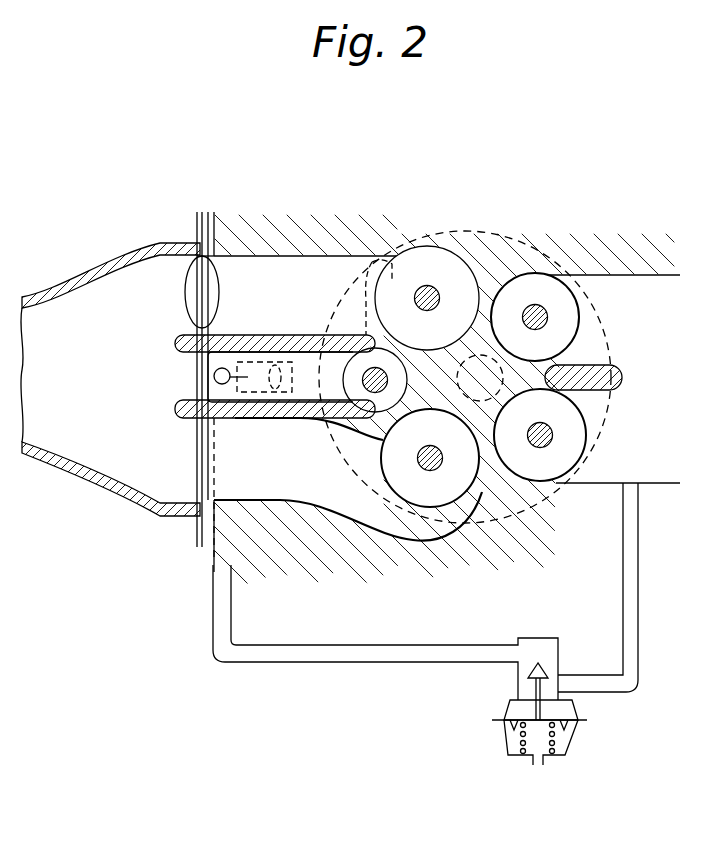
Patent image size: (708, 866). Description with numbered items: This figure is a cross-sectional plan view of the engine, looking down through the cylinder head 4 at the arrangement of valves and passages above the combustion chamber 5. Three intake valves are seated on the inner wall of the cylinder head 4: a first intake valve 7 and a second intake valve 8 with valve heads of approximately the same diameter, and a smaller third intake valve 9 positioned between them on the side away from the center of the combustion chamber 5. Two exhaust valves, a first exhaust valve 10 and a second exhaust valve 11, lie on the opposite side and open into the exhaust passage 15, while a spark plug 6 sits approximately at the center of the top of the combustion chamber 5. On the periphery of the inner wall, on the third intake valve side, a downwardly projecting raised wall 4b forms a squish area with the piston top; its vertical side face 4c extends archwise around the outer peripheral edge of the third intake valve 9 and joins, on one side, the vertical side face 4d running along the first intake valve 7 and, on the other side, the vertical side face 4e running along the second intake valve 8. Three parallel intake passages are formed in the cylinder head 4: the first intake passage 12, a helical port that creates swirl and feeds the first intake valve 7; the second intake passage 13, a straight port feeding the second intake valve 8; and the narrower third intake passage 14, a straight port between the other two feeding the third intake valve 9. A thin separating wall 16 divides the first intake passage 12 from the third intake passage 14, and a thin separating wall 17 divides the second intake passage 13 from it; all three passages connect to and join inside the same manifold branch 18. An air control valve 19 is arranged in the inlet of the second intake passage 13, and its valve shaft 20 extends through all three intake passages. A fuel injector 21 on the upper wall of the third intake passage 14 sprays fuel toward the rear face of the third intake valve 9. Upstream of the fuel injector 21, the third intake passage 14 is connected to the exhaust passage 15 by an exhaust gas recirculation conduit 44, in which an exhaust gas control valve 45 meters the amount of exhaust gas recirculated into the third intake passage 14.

The cylinder head 4 is at (590, 263).
The raised wall 4b is at (357, 443).
The vertical side face 4c is at (380, 498).
The vertical side face 4d is at (390, 527).
The vertical side face 4e is at (387, 247).
The combustion chamber 5 is at (522, 513).
The spark plug 6 is at (500, 238).
The first intake valve 7 is at (440, 493).
The second intake valve 8 is at (430, 258).
The third intake valve 9 is at (352, 333).
The first exhaust valve 10 is at (558, 460).
The second exhaust valve 11 is at (540, 288).
The first intake passage 12 is at (337, 510).
The second intake passage 13 is at (298, 287).
The third intake passage 14 is at (298, 420).
The exhaust passage 15 is at (624, 308).
The separating wall 16 is at (252, 440).
The separating wall 17 is at (270, 340).
The manifold branch 18 is at (98, 480).
The air control valve 19 is at (196, 290).
The valve shaft 20 is at (202, 533).
The fuel injector 21 is at (205, 378).
The exhaust gas recirculation conduit 44 is at (283, 663).
The exhaust gas control valve 45 is at (578, 741).